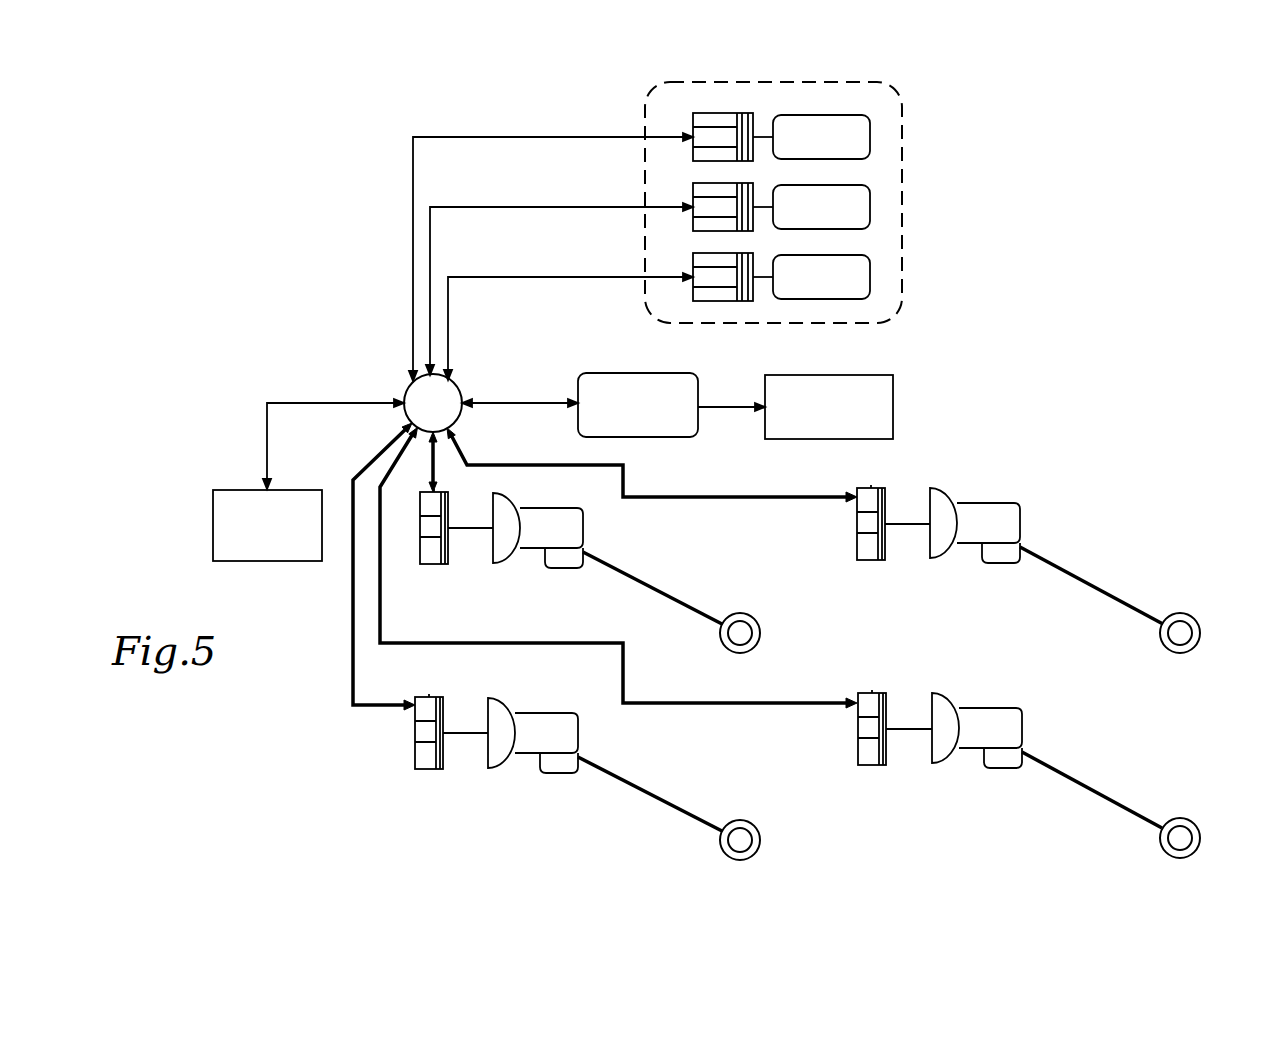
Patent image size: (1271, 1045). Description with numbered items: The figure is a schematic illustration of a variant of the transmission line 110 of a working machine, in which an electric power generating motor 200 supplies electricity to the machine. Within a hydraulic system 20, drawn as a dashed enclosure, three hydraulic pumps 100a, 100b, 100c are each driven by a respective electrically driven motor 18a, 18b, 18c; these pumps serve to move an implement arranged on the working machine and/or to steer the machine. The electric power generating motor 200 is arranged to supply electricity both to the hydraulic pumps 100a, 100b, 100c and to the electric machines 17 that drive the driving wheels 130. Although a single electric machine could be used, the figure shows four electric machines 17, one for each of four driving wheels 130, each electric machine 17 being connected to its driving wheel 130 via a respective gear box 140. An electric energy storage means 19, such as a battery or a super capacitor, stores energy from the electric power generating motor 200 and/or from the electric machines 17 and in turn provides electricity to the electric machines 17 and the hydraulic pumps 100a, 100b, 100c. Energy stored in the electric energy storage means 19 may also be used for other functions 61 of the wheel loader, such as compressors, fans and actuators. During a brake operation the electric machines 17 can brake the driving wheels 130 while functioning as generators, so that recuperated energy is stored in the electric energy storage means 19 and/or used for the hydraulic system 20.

The transmission line 110 is at (323, 336).
The hydraulic system 20 is at (622, 96).
The motor 18a is at (712, 296).
The motor 18b is at (704, 189).
The motor 18c is at (716, 116).
The hydraulic pump 100a is at (826, 292).
The hydraulic pump 100b is at (850, 206).
The hydraulic pump 100c is at (858, 138).
The electric energy storage means 19 is at (672, 422).
The other functions 61 is at (845, 425).
The electric power generating motor 200 is at (237, 507).
The electric machine 17 is at (420, 532).
The gear box 140 is at (568, 530).
The driving wheels 130 is at (760, 633).